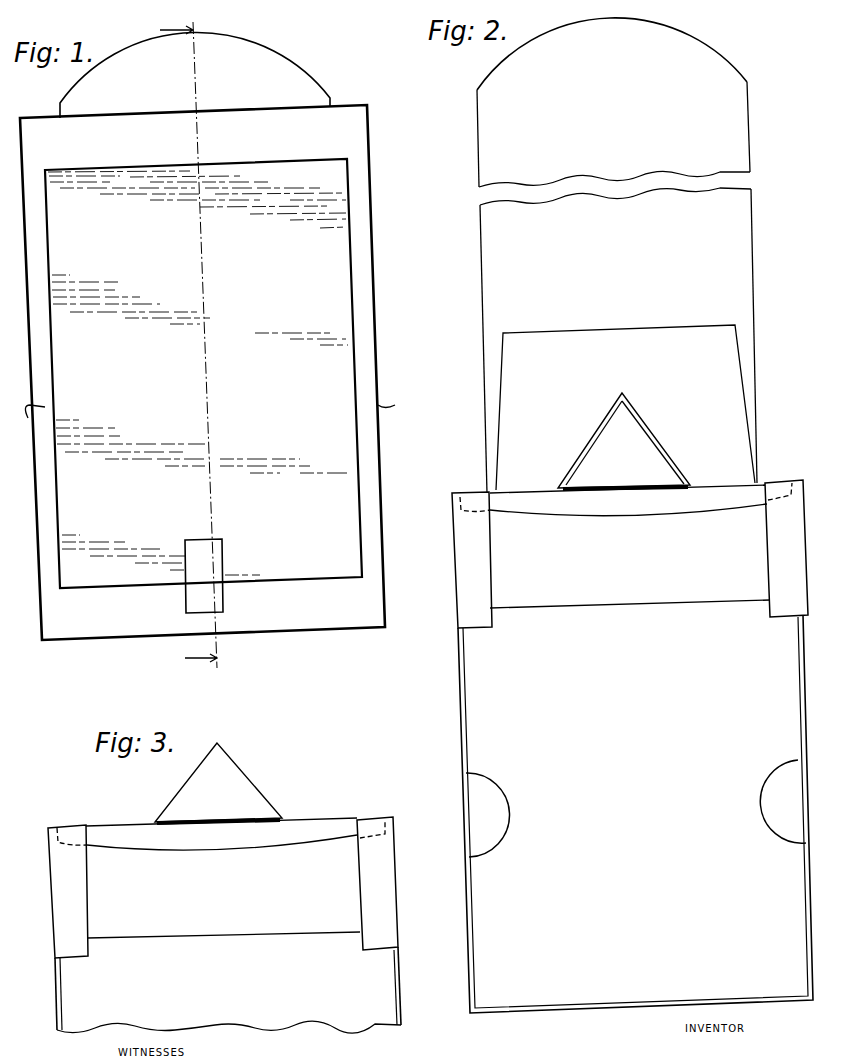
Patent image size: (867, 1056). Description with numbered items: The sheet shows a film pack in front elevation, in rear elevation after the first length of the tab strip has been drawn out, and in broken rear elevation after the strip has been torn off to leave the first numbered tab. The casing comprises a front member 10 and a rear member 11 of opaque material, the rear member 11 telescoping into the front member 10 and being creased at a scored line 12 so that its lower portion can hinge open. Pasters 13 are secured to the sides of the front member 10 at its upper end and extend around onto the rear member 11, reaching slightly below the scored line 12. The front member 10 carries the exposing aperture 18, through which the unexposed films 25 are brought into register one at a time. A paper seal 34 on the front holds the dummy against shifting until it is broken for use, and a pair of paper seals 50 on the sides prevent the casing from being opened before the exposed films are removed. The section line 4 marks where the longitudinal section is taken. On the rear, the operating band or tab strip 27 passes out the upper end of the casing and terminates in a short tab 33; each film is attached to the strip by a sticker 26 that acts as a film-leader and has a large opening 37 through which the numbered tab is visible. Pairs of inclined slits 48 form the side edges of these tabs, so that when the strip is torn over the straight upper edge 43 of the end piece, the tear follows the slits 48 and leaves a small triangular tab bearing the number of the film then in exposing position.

In FIG. 1, the section line 4— 4 is at (196, 341).
In FIG. 1, the front member 10 is at (340, 120).
In FIG. 2, the rear member 11 is at (495, 698).
In FIG. 3, the rear member 11 is at (368, 1000).
In FIG. 2, the scored line 12 is at (634, 605).
In FIG. 3, the scored line 12 is at (295, 935).
In FIG. 2, the pasters 13 is at (467, 575).
In FIG. 3, the pasters 13 is at (73, 912).
In FIG. 1, the exposing aperture 18 is at (348, 276).
In FIG. 1, the unexposed films 25 is at (199, 373).
In FIG. 2, the stickers (film-leaders) 26 is at (625, 407).
In FIG. 2, the operating band (tab strip) 27 is at (617, 287).
In FIG. 1, the tab 33 is at (268, 68).
In FIG. 2, the tab 33 is at (653, 47).
In FIG. 1, the paper seal 34 is at (208, 549).
In FIG. 2, the large opening 37 is at (625, 410).
In FIG. 3, the large opening 37 is at (218, 783).
In FIG. 2, the upper edge 43 is at (631, 504).
In FIG. 3, the upper edge 43 is at (207, 840).
In FIG. 2, the slits 48 is at (596, 440).
In FIG. 1, the paper seals 50 is at (220, 393).
In FIG. 2, the paper seals 50 is at (490, 818).